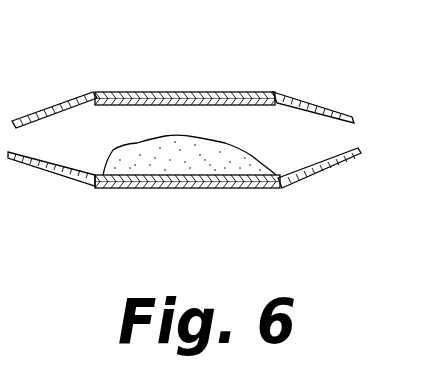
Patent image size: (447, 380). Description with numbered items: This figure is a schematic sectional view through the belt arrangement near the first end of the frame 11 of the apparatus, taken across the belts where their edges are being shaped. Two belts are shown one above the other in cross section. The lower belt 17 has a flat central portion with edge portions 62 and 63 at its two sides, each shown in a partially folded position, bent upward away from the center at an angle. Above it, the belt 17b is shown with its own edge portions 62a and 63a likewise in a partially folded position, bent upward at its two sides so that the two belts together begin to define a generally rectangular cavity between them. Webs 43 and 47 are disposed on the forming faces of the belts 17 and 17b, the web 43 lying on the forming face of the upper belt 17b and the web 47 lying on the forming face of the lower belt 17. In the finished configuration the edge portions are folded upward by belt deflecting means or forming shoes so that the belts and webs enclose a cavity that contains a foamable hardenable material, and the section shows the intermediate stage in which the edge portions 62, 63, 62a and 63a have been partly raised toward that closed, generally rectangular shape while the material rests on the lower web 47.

The frame 11 is at (150, 152).
The belt 17 is at (128, 188).
The belt 17b is at (244, 92).
The web 43 is at (186, 92).
The web 47 is at (208, 178).
The edge portion 62 is at (58, 178).
The edge portion 62a is at (53, 108).
The edge portion 63 is at (320, 173).
The edge portion 63a is at (308, 103).